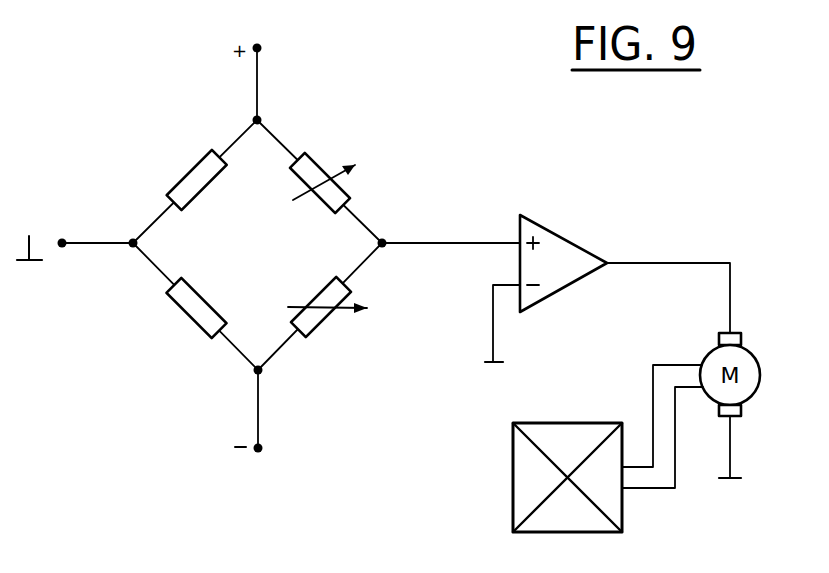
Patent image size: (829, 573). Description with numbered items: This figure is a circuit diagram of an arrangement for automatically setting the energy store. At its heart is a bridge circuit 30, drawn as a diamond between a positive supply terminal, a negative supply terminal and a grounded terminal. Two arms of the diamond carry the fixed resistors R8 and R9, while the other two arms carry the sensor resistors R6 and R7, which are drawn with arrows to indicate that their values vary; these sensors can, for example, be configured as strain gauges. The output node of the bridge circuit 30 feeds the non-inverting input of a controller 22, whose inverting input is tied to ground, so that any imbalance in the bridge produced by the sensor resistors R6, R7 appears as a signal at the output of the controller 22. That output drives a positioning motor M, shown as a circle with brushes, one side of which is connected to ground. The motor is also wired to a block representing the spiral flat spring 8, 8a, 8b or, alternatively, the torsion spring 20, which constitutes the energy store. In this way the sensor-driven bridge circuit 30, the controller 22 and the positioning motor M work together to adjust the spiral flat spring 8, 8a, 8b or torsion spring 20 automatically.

The bridge circuit 30 is at (278, 263).
The resistor R8 is at (190, 178).
The sensor resistor R6 is at (333, 195).
The resistor R9 is at (200, 303).
The sensor resistor R7 is at (317, 320).
The controller 22 is at (535, 297).
The spiral flat spring 8 is at (652, 487).
The spiral flat spring 8a is at (652, 487).
The spiral flat spring 8b is at (652, 487).
The torsion spring 20 is at (615, 512).